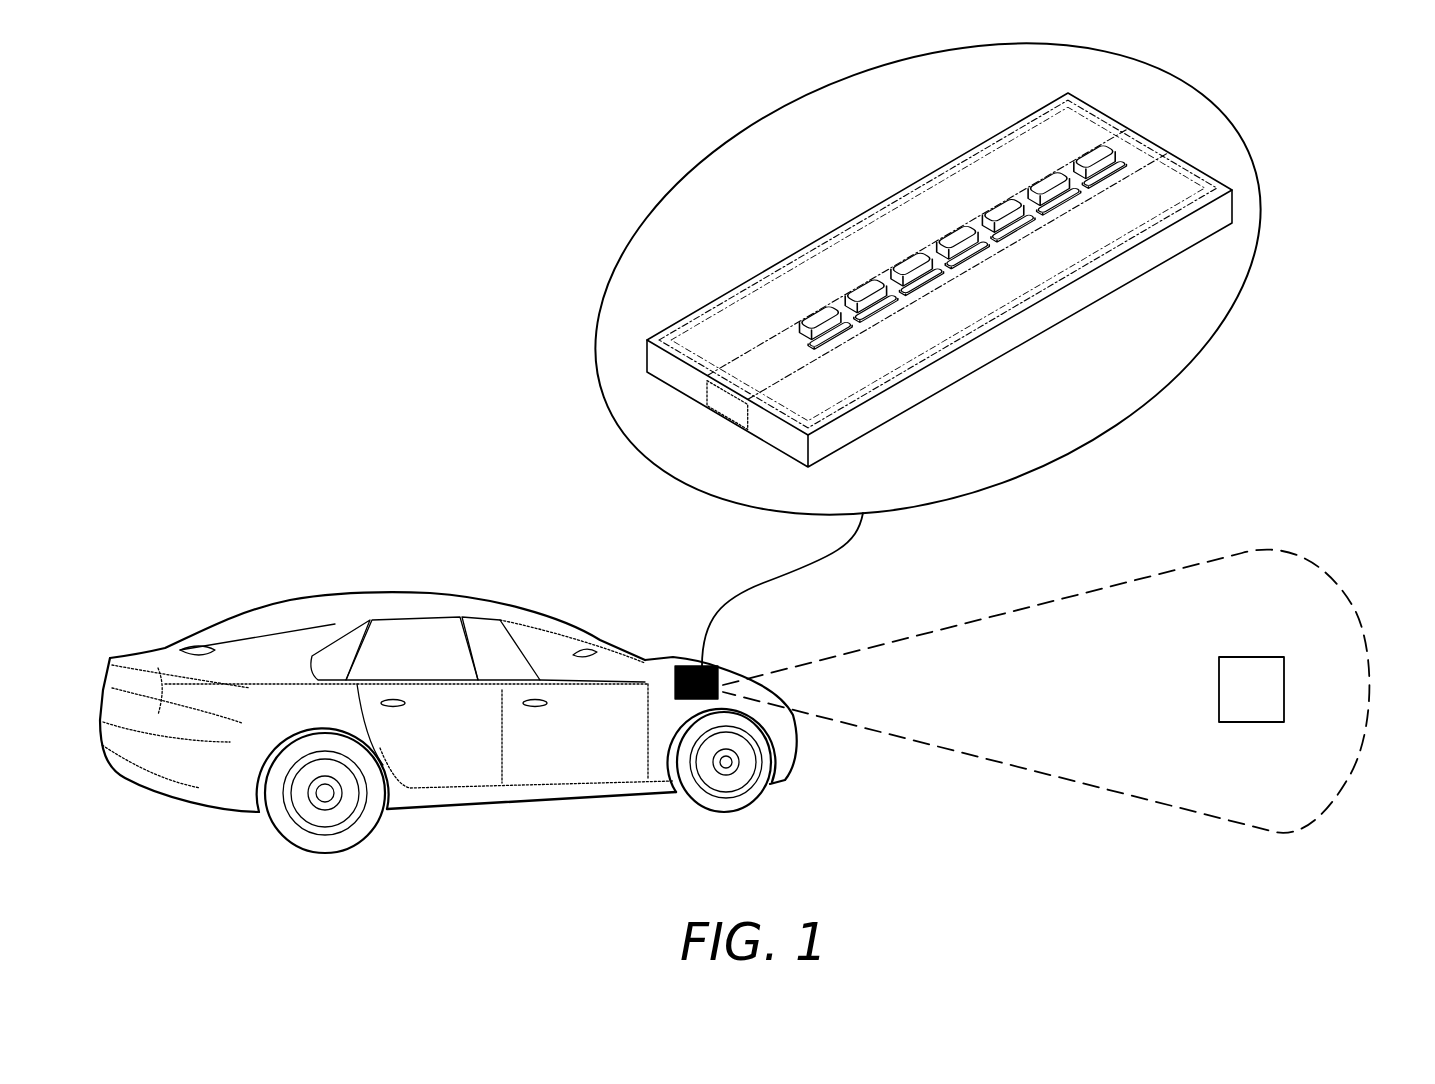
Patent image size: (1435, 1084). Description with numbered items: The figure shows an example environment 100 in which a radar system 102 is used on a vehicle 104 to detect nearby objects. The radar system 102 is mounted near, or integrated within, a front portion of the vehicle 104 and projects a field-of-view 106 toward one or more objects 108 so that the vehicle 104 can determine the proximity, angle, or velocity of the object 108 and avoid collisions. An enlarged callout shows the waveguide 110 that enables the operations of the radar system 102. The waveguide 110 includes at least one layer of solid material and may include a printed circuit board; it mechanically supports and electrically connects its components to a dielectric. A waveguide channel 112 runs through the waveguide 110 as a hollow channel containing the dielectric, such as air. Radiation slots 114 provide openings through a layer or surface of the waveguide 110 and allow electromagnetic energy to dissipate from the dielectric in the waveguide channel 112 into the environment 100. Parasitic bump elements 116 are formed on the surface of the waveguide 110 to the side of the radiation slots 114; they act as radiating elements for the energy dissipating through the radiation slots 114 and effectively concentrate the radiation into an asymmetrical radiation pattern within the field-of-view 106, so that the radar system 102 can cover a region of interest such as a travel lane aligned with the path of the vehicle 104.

The environment 100 is at (320, 118).
The radar system 102 is at (675, 665).
The vehicle 104 is at (363, 597).
The field-of-view 106 is at (1252, 552).
The object 108 is at (1218, 688).
The waveguide 110 is at (598, 325).
The waveguide channel 112 is at (730, 407).
The radiation slots 114 is at (788, 347).
The parasitic bump elements 116 is at (878, 278).